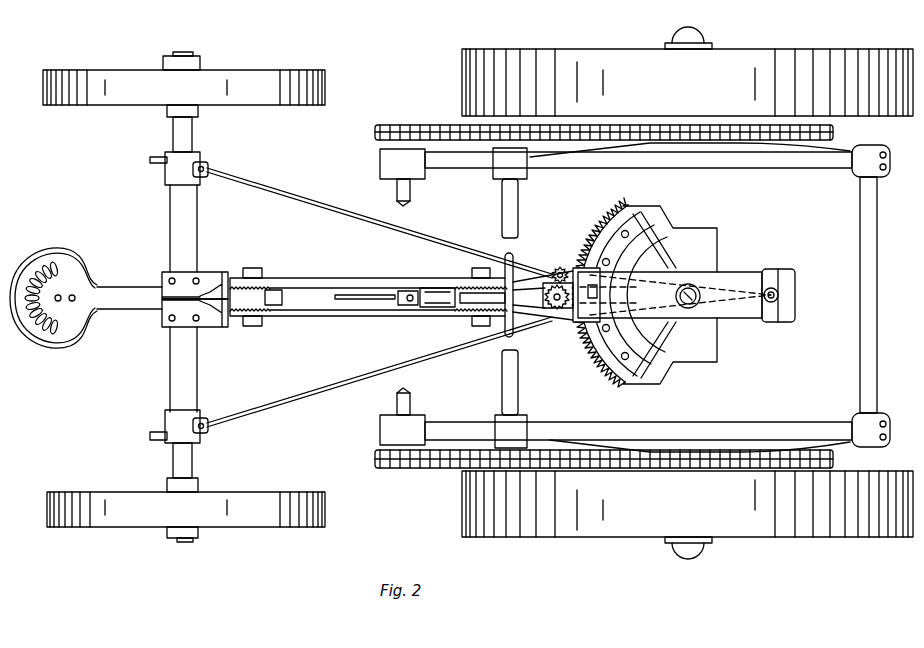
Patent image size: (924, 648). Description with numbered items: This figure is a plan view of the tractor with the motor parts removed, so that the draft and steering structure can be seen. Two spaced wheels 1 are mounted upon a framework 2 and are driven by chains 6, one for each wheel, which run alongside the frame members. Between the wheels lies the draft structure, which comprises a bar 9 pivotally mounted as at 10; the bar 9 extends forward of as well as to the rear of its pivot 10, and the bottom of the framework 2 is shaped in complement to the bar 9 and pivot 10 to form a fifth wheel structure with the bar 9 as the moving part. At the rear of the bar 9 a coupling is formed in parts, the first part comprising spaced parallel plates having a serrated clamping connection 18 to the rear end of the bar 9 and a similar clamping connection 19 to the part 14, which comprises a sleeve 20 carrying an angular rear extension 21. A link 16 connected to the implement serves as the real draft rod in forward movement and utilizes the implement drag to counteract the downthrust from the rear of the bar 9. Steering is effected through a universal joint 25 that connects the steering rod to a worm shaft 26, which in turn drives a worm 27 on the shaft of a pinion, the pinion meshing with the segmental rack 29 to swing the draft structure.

The wheels 1 is at (578, 66).
The framework 2 is at (823, 162).
The chains 6 is at (835, 131).
The bar 9 is at (737, 278).
The pivot 10 is at (698, 303).
The part 14 is at (212, 275).
The link 16 is at (302, 203).
The serrated clamping connection 18 is at (460, 308).
The clamping connection 19 is at (257, 308).
The sleeve 20 is at (257, 297).
The angular rear extension 21 is at (183, 318).
The universal joint 25 is at (420, 308).
The worm shaft 26 is at (560, 305).
The worm 27 is at (558, 267).
The segmental rack 29 is at (610, 382).